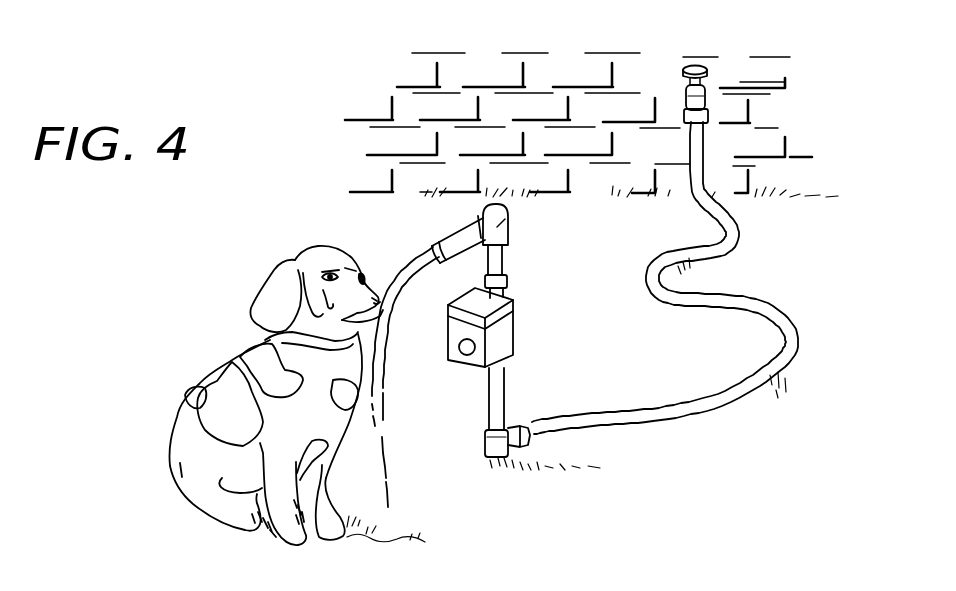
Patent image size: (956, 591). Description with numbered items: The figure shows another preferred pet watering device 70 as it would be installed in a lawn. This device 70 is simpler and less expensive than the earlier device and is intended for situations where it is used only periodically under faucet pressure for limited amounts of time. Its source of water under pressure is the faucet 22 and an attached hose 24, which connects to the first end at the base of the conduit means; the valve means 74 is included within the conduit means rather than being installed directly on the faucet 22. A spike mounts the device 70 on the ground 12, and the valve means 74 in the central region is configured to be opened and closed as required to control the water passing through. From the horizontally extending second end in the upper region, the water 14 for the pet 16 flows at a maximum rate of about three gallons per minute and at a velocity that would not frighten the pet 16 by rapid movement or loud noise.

The pet watering device 70 is at (271, 214).
The faucet 22 is at (685, 103).
The hose 24 is at (783, 313).
The ground 12 is at (651, 478).
The valve means 74 is at (508, 332).
The water 14 is at (412, 263).
The pet 16 is at (223, 360).